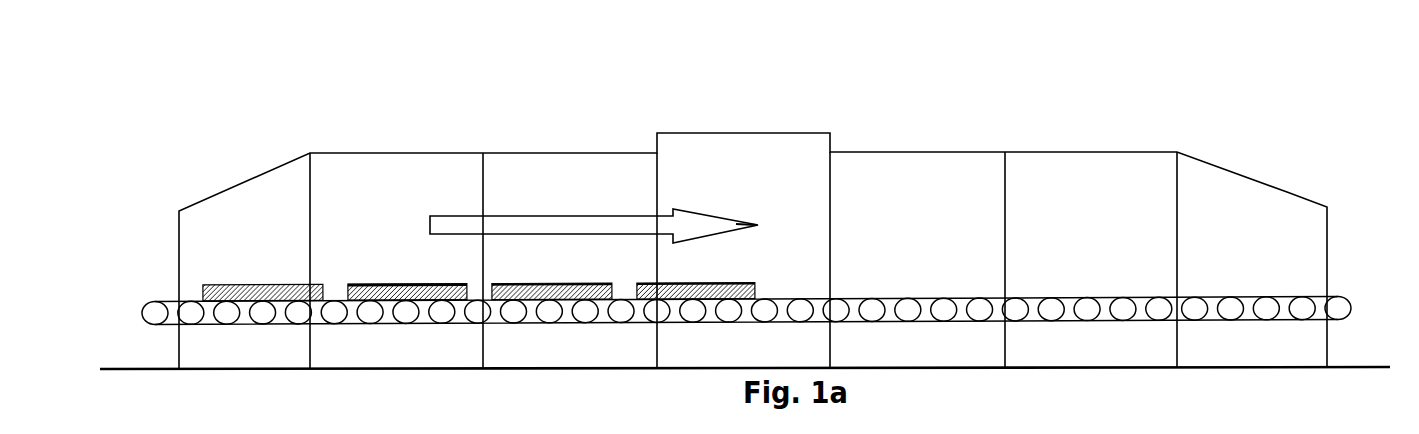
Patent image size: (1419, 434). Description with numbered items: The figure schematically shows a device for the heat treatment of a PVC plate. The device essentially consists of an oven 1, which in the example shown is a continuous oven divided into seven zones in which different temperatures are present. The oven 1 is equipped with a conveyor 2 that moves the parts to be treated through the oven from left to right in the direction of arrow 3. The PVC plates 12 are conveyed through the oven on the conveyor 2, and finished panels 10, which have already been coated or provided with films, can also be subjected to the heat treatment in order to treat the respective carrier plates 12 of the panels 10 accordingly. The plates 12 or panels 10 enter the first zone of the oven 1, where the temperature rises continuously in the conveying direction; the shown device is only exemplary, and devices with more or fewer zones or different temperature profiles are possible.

The oven 1 is at (575, 117).
The conveyor 2 is at (142, 302).
The arrow 3 is at (453, 216).
The finished panels 10 is at (363, 277).
The PVC plates 12 is at (213, 278).